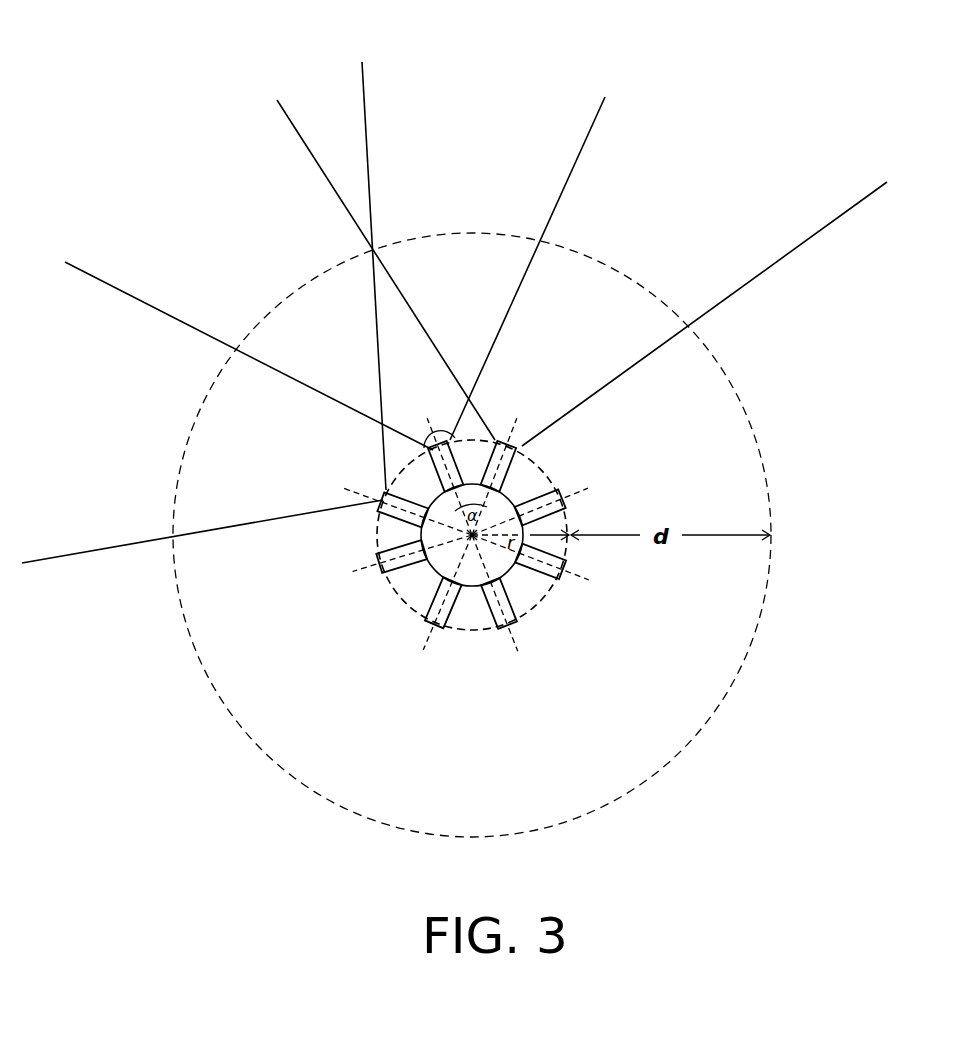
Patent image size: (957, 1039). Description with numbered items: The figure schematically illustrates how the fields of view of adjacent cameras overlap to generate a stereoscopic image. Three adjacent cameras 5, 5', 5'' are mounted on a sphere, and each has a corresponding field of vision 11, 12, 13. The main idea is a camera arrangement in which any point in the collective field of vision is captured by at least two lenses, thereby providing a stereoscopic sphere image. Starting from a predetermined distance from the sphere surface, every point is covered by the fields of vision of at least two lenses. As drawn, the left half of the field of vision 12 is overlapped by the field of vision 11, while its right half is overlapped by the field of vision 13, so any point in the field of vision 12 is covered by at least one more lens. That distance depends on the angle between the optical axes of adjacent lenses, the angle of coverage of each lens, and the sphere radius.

The camera 5 is at (445, 476).
The camera 5' is at (490, 476).
The camera 5'' is at (530, 504).
The field of vision 11 is at (387, 492).
The field of vision 12 is at (386, 276).
The field of vision 13 is at (668, 271).